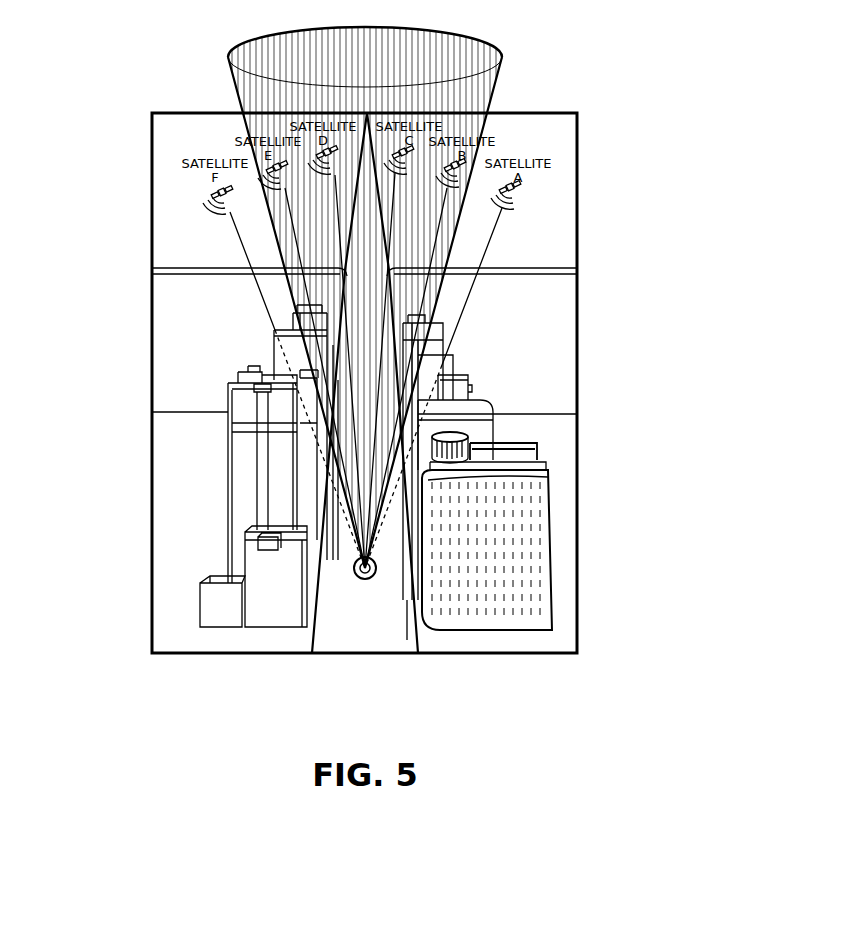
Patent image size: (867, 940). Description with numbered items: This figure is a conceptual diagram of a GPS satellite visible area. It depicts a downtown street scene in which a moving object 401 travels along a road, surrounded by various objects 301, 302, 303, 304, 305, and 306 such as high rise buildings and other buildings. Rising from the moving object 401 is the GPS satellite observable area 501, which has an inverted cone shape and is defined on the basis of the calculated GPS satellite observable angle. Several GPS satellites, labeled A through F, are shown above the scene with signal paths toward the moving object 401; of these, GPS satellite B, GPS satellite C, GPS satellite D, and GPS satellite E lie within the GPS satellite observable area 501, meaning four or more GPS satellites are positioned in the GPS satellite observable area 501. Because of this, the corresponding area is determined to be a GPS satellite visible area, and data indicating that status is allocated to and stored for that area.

The object 301 is at (282, 350).
The object 302 is at (240, 421).
The object 303 is at (248, 593).
The object 304 is at (447, 342).
The object 305 is at (485, 430).
The object 306 is at (526, 552).
The moving object 401 is at (360, 580).
The GPS satellite observable area 501 is at (498, 50).